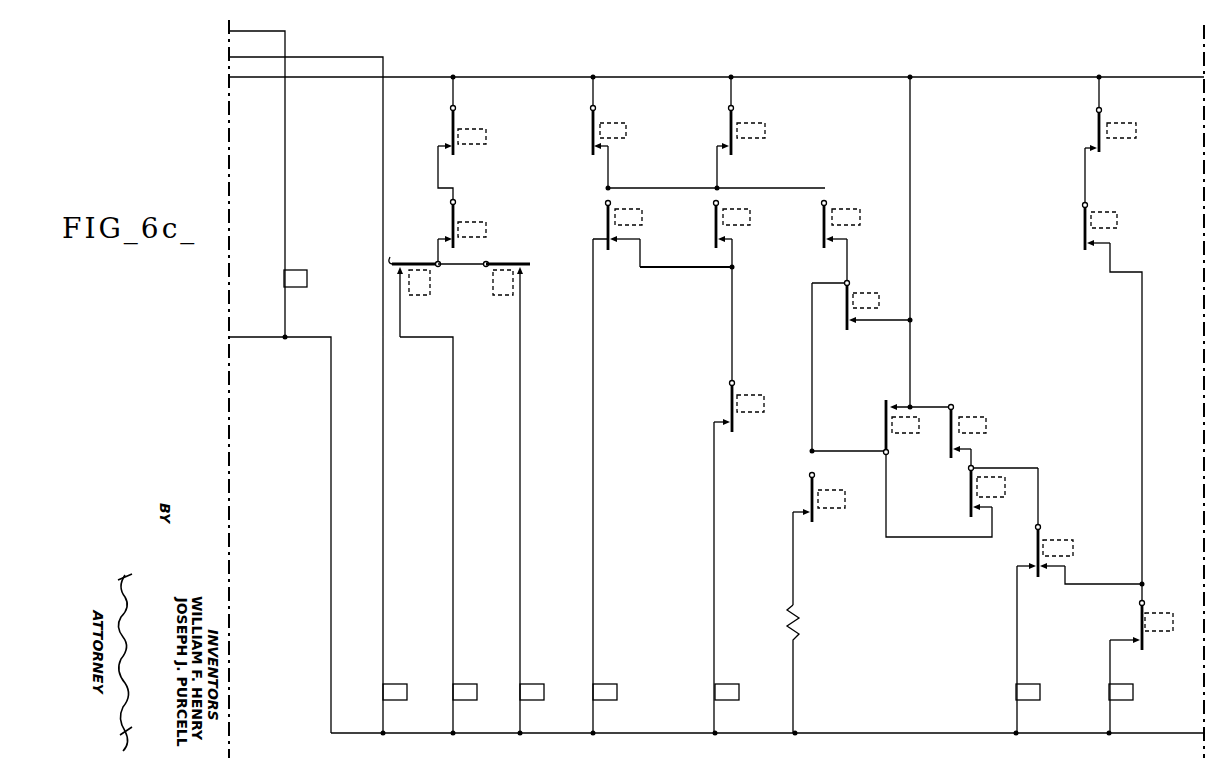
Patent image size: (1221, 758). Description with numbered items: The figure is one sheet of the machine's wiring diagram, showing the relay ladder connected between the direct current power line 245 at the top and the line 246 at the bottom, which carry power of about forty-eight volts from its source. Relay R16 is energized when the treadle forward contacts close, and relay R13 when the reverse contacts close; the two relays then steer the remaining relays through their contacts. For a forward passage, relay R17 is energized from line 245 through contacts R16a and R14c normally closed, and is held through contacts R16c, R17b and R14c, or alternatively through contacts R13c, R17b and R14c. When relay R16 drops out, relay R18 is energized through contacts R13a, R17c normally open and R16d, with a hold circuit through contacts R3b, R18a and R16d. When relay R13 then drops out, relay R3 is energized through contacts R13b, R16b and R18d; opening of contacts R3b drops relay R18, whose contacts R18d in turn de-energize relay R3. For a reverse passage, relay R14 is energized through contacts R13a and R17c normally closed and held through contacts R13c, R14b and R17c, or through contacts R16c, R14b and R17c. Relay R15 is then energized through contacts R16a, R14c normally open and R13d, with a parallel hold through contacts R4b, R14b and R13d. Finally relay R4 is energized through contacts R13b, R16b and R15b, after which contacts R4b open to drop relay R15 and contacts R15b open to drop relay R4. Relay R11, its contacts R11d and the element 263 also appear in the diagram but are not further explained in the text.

The line 245 is at (522, 77).
The line 246 is at (658, 733).
The resistor 263 is at (800, 626).
The relay R3 is at (747, 122).
The contacts R3b is at (730, 157).
The relay R4 is at (1117, 122).
The contacts R4b is at (1097, 156).
The relay R11 is at (831, 491).
The relay R11 contact d R11d is at (814, 518).
The relay R13 is at (468, 133).
The contacts R13a is at (596, 153).
The contacts R13b is at (455, 150).
The contacts R13c is at (850, 328).
The contacts R13d is at (1138, 634).
The relay R14 is at (844, 208).
The contacts R14b is at (826, 249).
The contacts R14c is at (1045, 580).
The relay R15 is at (418, 296).
The contacts R15b is at (421, 488).
The relay R16 is at (978, 409).
The contacts R16a is at (957, 457).
The contacts R16b is at (455, 246).
The contacts R16c is at (889, 390).
The contacts R16d is at (740, 557).
The relay R17 is at (627, 208).
The contacts R17b is at (975, 518).
The contacts R17c is at (606, 236).
The relay R18 is at (493, 283).
The contacts R18a is at (717, 249).
The contacts R18d is at (527, 266).